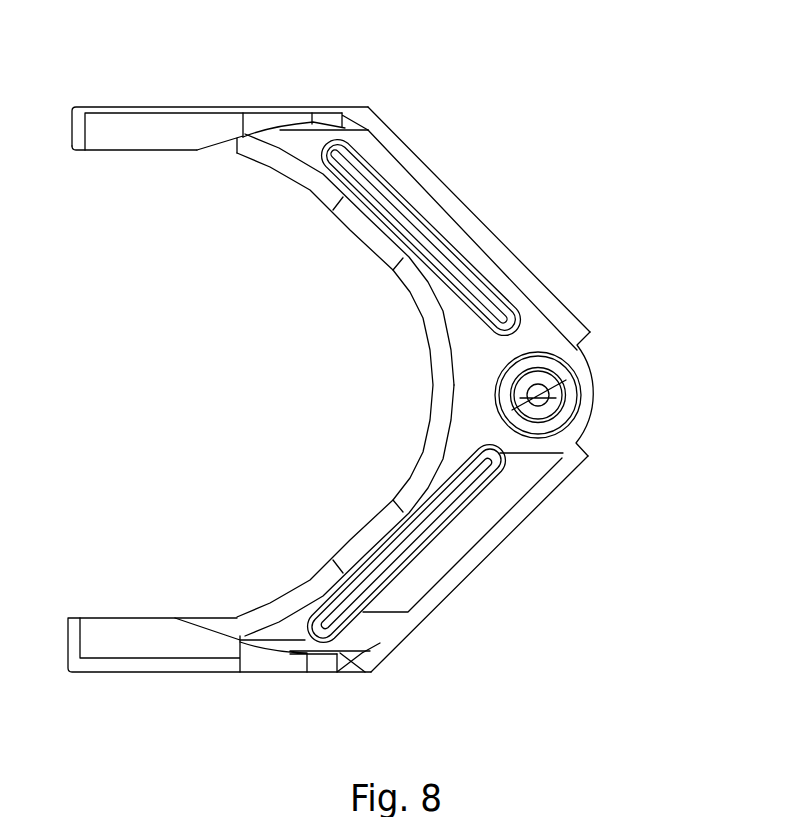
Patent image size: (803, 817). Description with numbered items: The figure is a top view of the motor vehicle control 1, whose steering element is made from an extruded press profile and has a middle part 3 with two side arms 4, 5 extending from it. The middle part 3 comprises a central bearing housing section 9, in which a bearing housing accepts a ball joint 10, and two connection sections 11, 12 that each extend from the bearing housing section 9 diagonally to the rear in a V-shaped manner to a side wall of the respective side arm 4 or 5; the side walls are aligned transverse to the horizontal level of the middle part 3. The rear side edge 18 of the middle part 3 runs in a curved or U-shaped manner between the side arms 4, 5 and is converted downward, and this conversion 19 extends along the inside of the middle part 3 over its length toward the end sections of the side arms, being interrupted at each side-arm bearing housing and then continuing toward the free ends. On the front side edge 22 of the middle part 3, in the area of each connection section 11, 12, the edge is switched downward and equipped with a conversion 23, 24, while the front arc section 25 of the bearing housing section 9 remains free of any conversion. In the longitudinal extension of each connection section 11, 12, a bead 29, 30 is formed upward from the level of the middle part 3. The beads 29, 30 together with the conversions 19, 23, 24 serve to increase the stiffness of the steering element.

The motor vehicle control 1 is at (388, 404).
The middle part 3 is at (602, 384).
The side arm 4 is at (225, 683).
The side arm 5 is at (226, 99).
The bearing housing section 9 is at (477, 430).
The ball joint 10 is at (566, 398).
The connection section 11 is at (452, 549).
The connection section 12 is at (473, 247).
The rear side edge 18 is at (386, 475).
The conversion 19 is at (412, 308).
The front side edge 22 is at (477, 599).
The conversion 23 is at (500, 534).
The conversion 24 is at (462, 205).
The front arc section 25 is at (596, 420).
The bead 29 is at (408, 563).
The bead 30 is at (387, 190).